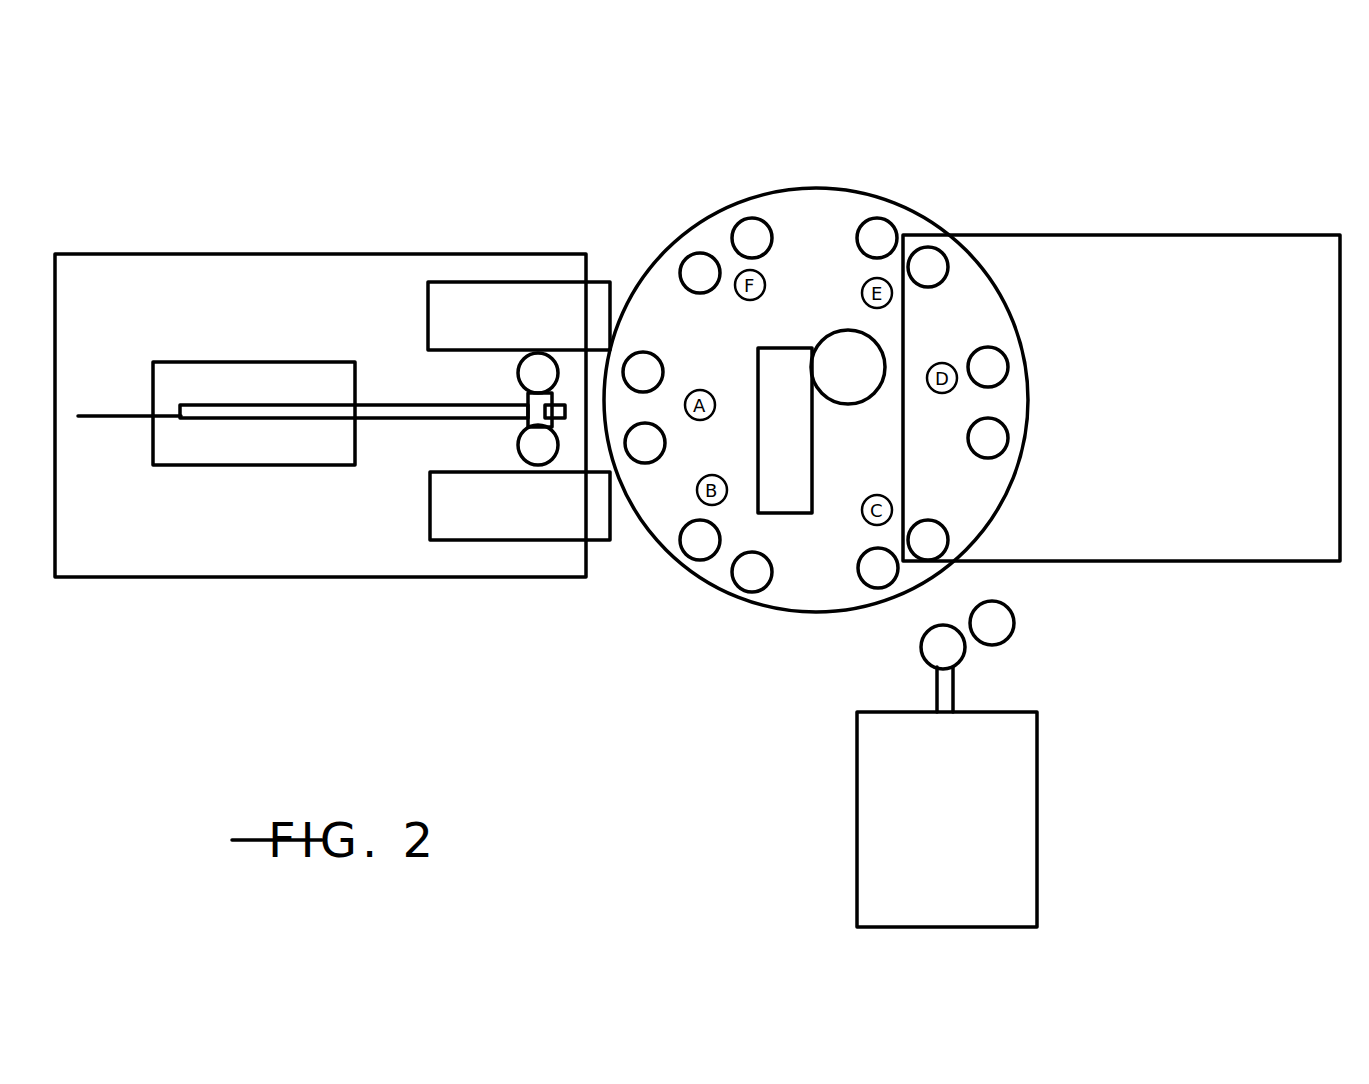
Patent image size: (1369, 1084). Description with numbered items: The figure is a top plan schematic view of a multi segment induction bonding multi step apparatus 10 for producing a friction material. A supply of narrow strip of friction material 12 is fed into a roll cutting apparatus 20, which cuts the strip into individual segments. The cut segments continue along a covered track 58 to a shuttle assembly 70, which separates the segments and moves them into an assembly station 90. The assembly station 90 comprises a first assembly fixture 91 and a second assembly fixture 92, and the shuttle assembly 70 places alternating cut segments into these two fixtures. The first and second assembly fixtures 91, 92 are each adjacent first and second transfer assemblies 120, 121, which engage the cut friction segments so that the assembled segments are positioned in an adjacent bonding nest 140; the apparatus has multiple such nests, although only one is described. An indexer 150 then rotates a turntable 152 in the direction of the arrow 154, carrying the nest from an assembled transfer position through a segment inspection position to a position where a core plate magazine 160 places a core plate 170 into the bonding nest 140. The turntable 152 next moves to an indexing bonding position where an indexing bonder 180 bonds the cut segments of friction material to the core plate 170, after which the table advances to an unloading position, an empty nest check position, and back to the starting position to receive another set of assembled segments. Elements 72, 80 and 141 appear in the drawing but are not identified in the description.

The multi segment induction bonding multi step apparatus 10 is at (210, 146).
The narrow strip of friction material 12 is at (112, 414).
The roll cutting apparatus 20 is at (303, 355).
The covered track 58 is at (398, 405).
The shuttle assembly 70 is at (521, 379).
The rotatable platform edge 72 is at (606, 372).
The clamp 80 is at (563, 404).
The assembly station 90 is at (460, 432).
The first assembly fixture 91 is at (526, 400).
The second assembly fixture 92 is at (507, 458).
The first transfer assembly 120 is at (430, 512).
The second transfer assembly 121 is at (500, 286).
The bonding nest 140 is at (650, 466).
The receptacle slot 141 is at (664, 372).
The indexer 150 is at (797, 348).
The turntable 152 is at (702, 224).
The arrow 154 is at (870, 150).
The core plate magazine 160 is at (857, 768).
The core plate 170 is at (1014, 620).
The indexing bonder 180 is at (1100, 236).